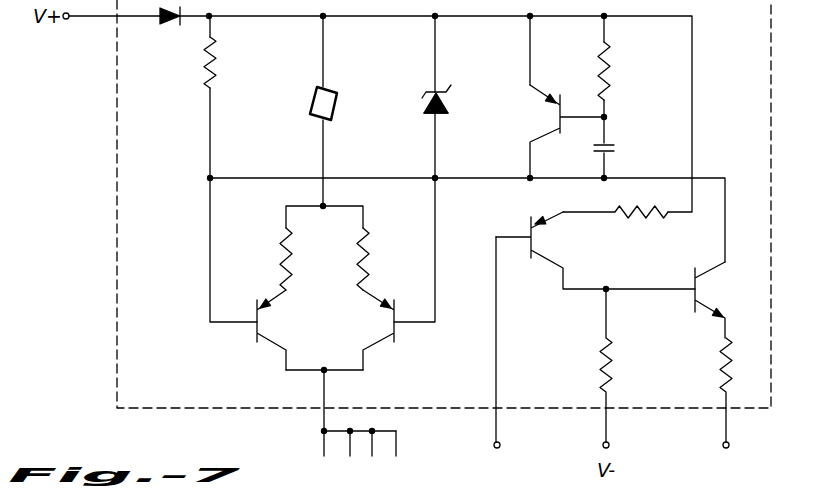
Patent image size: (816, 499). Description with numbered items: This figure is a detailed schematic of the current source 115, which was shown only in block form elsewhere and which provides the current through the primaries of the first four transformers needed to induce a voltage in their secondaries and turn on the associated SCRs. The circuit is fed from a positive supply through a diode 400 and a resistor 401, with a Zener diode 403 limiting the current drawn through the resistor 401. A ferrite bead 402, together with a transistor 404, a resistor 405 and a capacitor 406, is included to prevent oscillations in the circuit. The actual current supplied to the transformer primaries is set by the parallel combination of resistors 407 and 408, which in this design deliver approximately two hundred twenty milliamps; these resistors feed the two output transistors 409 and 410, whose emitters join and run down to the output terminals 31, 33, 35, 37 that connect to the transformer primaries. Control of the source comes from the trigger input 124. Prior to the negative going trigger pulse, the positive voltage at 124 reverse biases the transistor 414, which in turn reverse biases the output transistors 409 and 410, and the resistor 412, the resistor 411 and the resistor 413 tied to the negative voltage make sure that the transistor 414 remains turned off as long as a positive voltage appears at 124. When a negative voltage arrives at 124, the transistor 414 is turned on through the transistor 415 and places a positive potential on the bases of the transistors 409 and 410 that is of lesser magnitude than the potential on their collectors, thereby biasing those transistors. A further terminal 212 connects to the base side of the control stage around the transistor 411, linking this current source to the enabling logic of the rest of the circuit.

The current source 115 is at (108, 148).
The diode 400 is at (176, 25).
The resistor 401 is at (215, 87).
The ferrite bead 402 is at (334, 98).
The Zener diode 403 is at (450, 100).
The transistor 404 is at (545, 119).
The resistor 405 is at (612, 52).
The capacitor 406 is at (616, 147).
The resistor 407 is at (280, 245).
The resistor 408 is at (368, 246).
The output transistor 409 is at (258, 321).
The output transistor 410 is at (392, 320).
The resistor 411 is at (536, 236).
The resistor 412 is at (616, 216).
The resistor 413 is at (610, 376).
The transistor 414 is at (703, 298).
The transistor 415 is at (722, 362).
The terminal 31 is at (323, 448).
The terminal 33 is at (350, 448).
The terminal 35 is at (372, 450).
The terminal 37 is at (397, 448).
The terminal 212 is at (497, 448).
The trigger pulse input 124 is at (729, 447).